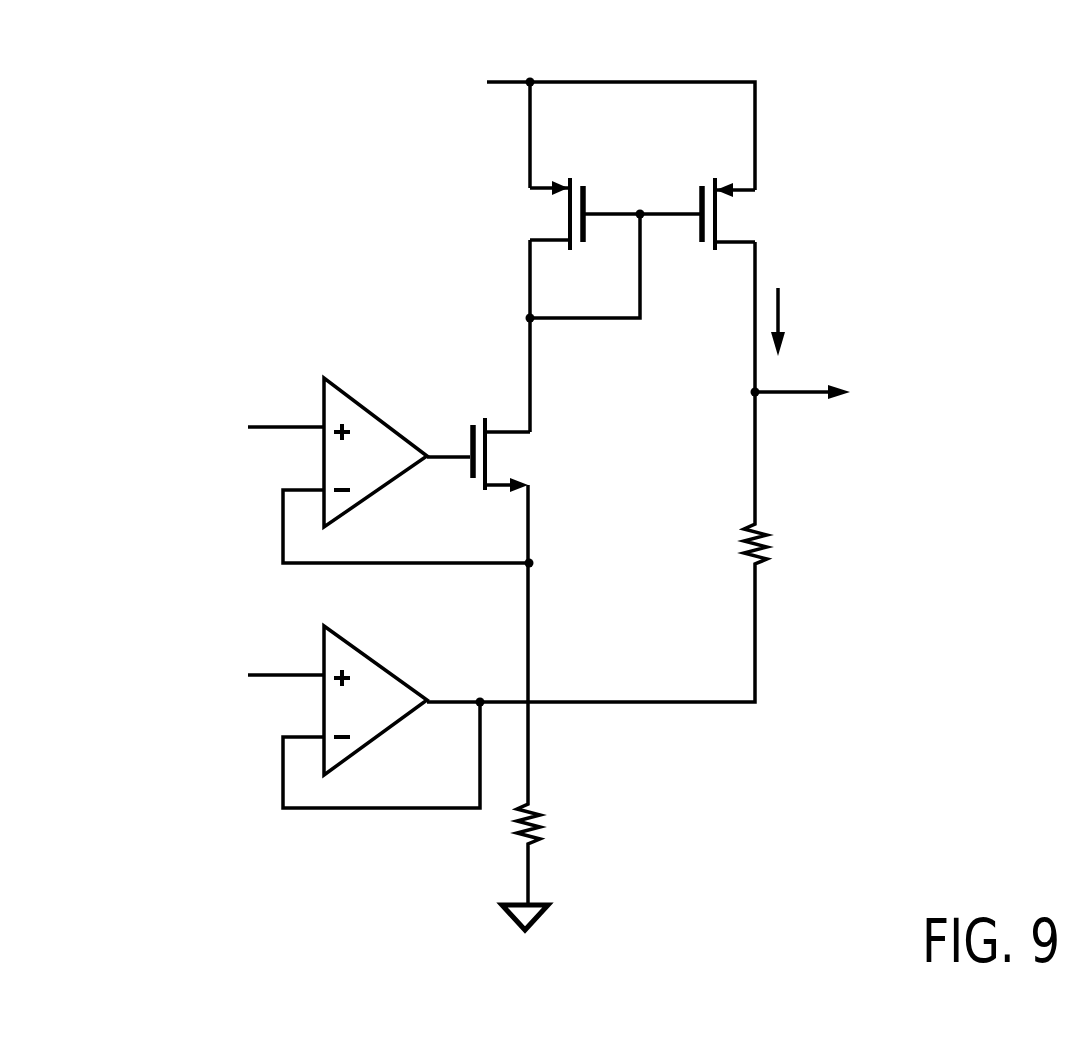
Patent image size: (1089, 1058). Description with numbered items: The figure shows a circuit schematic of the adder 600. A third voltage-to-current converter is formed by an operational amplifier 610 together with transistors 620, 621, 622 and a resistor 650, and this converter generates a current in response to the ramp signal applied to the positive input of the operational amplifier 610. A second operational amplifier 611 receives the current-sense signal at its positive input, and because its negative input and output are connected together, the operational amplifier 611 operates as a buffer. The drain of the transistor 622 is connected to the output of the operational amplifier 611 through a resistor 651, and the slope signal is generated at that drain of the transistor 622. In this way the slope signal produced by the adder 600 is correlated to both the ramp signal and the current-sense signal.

The adder 600 is at (1053, 81).
The operational amplifier 610 is at (378, 410).
The operational amplifier 611 is at (378, 658).
The transistor 620 is at (530, 459).
The transistor 621 is at (526, 214).
The transistor 622 is at (766, 214).
The resistor 650 is at (546, 823).
The resistor 651 is at (770, 546).